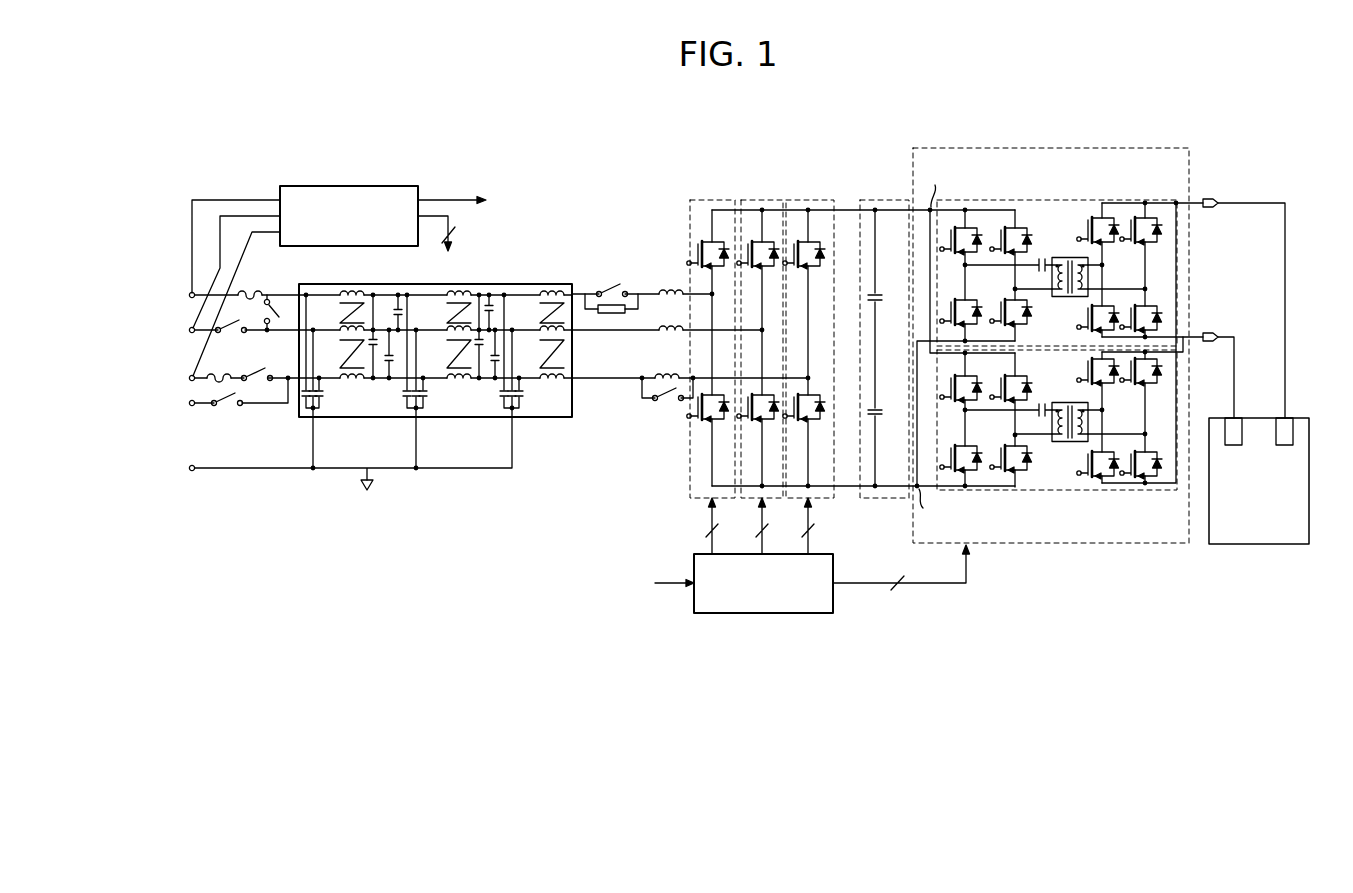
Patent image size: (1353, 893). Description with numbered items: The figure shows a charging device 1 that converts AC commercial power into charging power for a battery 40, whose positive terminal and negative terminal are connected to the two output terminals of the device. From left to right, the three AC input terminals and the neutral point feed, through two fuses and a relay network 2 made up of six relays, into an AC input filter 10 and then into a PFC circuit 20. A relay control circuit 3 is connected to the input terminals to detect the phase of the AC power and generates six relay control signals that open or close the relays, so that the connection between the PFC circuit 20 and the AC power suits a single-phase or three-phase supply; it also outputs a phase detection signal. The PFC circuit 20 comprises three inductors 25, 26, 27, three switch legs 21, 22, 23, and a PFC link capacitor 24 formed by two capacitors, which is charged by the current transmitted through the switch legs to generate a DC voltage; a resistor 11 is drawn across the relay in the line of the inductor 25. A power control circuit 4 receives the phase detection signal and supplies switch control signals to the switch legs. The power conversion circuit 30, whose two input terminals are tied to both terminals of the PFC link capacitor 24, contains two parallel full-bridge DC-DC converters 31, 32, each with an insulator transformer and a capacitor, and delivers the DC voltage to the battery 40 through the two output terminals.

The charging device 1 is at (282, 173).
The relay network 2 is at (444, 391).
The relay control circuit 3 is at (376, 186).
The power control circuit 4 is at (763, 613).
The AC input filter 10 is at (573, 400).
The resistor 11 is at (612, 313).
The PFC circuit 20 is at (726, 349).
The switch leg 21 is at (711, 200).
The switch leg 22 is at (761, 200).
The switch leg 23 is at (806, 200).
The PFC link capacitor 24 is at (881, 200).
The inductor 25 is at (687, 282).
The inductor 26 is at (668, 318).
The inductor 27 is at (691, 365).
The power conversion circuit 30 is at (1051, 148).
The DC-DC converter 31 is at (1061, 200).
The DC-DC converter 32 is at (1057, 497).
The battery 40 is at (1258, 545).